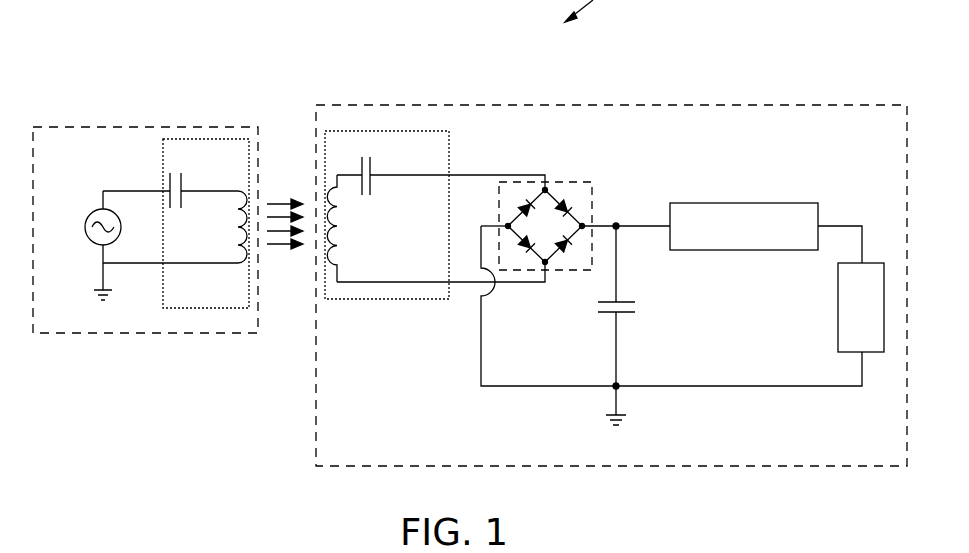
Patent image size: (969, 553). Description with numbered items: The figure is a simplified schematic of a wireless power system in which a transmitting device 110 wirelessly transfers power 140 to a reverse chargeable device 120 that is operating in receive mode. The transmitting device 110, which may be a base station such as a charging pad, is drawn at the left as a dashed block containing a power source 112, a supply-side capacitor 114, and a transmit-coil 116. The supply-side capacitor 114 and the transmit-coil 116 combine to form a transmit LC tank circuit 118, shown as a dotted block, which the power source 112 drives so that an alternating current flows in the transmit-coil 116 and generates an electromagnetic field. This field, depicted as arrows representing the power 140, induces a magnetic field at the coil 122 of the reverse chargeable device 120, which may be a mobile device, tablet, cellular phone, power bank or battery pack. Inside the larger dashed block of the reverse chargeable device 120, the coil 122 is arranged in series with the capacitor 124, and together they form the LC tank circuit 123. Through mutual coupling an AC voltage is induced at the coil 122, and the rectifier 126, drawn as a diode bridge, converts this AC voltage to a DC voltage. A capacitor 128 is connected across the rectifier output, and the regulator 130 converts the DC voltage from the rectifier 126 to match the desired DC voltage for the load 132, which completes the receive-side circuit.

The transmitting device 110 is at (140, 127).
The power source 112 is at (85, 224).
The supply-side capacitor 114 is at (182, 178).
The transmit-coil 116 is at (238, 268).
The transmit LC tank circuit 118 is at (162, 163).
The reverse chargeable device 120 is at (800, 105).
The coil 122 is at (338, 259).
The LC tank circuit 123 is at (397, 300).
The capacitor 124 is at (375, 168).
The rectifier 126 is at (597, 187).
The capacitor 128 is at (641, 302).
The regulator 130 is at (753, 203).
The load 132 is at (838, 309).
The power 140 is at (287, 197).